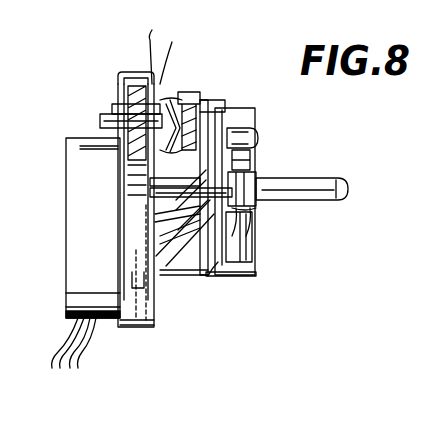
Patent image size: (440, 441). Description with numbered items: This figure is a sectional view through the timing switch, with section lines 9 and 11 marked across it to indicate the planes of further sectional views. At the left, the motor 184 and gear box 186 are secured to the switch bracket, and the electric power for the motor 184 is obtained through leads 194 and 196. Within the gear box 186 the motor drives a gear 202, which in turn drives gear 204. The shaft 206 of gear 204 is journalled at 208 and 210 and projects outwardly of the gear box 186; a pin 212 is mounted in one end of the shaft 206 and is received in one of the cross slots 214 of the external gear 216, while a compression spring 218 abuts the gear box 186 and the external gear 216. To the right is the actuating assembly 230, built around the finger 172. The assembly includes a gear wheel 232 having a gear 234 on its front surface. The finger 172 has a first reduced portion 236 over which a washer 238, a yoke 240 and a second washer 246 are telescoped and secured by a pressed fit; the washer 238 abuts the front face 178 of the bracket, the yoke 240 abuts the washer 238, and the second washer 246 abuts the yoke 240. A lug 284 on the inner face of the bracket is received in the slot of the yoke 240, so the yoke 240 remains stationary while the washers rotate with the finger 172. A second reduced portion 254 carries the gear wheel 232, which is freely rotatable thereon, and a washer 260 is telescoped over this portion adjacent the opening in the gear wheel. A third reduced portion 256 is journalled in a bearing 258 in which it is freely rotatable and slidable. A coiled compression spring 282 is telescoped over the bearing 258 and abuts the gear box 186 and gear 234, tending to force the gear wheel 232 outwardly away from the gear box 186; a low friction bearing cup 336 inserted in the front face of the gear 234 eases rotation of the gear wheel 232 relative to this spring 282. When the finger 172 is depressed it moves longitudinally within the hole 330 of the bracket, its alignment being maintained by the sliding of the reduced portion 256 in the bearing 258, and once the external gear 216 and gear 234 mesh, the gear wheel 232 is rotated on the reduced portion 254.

The section line 9— 9 is at (196, 55).
The section line 11— 11 is at (143, 84).
The finger 172 is at (340, 181).
The front face 178 is at (258, 276).
The motor 184 is at (72, 300).
The gear box 186 is at (118, 80).
The lead 194 is at (56, 356).
The lead 196 is at (78, 362).
The gear 202 is at (128, 163).
The gear 204 is at (66, 139).
The shaft 206 is at (100, 121).
The journal 208 is at (112, 110).
The journal 210 is at (164, 84).
The pin 212 is at (190, 110).
The cross slot 214 is at (222, 108).
The external gear 216 is at (186, 92).
The compression spring 218 is at (152, 82).
The actuating assembly 230 is at (232, 110).
The gear wheel 232 is at (174, 282).
The gear 234 is at (160, 268).
The first reduced portion 236 is at (260, 210).
The washer 238 is at (254, 176).
The yoke 240 is at (258, 242).
The second washer 246 is at (222, 276).
The second reduced portion 254 is at (156, 256).
The third reduced portion 256 is at (172, 212).
The bearing 258 is at (150, 200).
The washer 260 is at (255, 160).
The coiled compression spring 282 is at (150, 181).
The lug 284 is at (256, 136).
The hole 330 is at (256, 226).
The bearing cup 336 is at (160, 232).